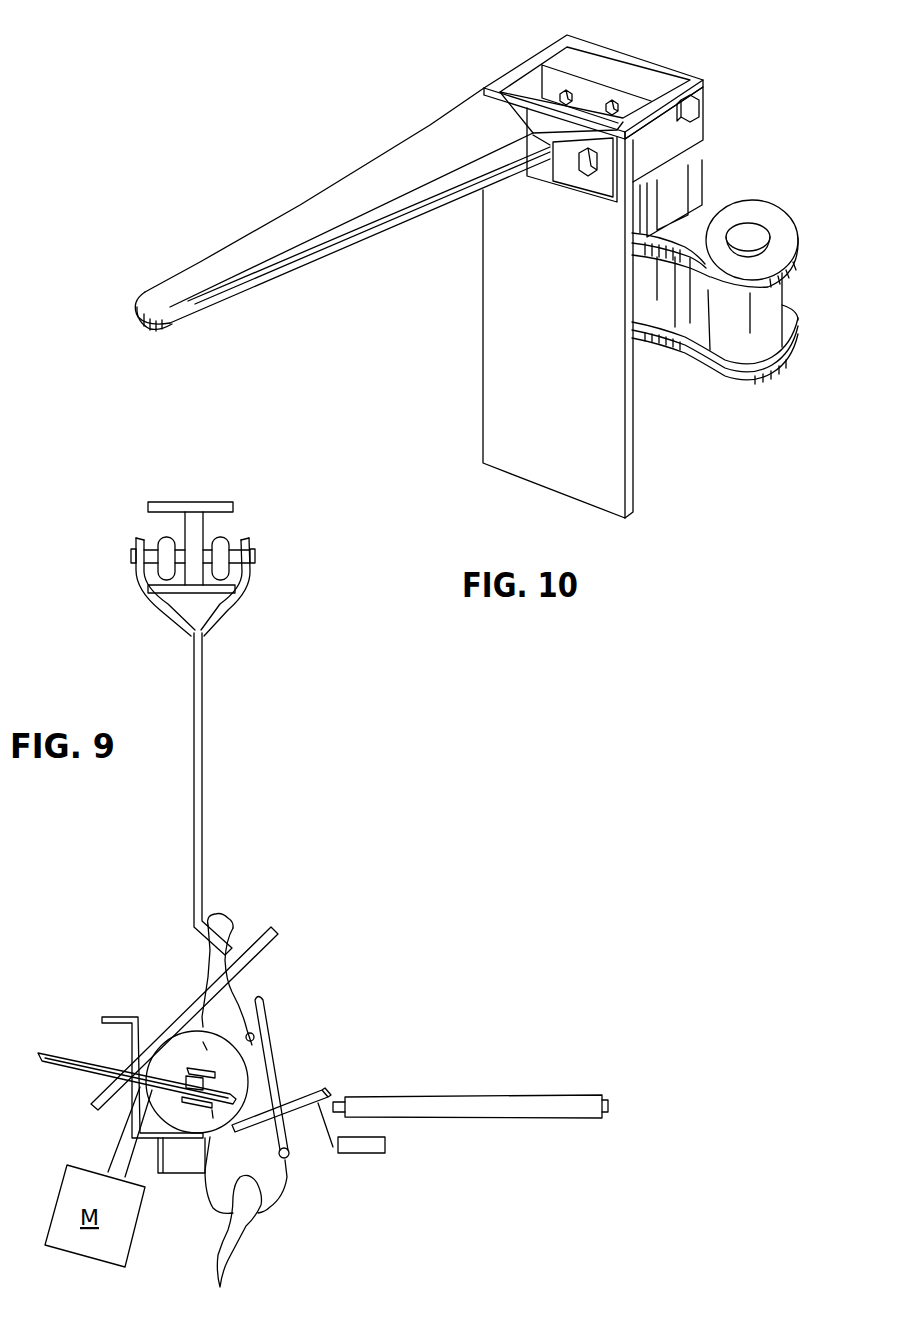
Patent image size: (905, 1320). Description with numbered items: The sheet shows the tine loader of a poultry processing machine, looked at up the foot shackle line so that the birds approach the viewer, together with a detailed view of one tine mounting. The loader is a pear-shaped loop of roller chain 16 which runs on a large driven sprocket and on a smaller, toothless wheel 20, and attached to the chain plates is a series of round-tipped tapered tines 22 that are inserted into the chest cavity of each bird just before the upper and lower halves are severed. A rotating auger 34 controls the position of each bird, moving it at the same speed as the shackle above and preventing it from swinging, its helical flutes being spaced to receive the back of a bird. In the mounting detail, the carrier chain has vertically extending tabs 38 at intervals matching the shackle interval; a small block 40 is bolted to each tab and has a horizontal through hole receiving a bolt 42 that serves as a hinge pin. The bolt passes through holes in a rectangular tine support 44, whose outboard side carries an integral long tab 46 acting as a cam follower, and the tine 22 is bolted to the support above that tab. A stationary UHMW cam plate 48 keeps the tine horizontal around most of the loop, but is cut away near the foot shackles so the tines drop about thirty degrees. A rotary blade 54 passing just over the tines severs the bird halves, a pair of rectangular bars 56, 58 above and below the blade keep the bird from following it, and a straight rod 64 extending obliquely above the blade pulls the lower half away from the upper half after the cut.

In FIG. 10, the roller chain 16 is at (690, 350).
In FIG. 9, the toothless wheel 20 is at (452, 1097).
In FIG. 10, the tine 22 is at (298, 217).
In FIG. 9, the tine 22 is at (302, 1085).
In FIG. 9, the rotating auger 34 is at (168, 1053).
In FIG. 10, the tab 38 is at (548, 82).
In FIG. 10, the block 40 is at (602, 67).
In FIG. 10, the bolt 42 is at (707, 110).
In FIG. 10, the tine support 44 is at (697, 72).
In FIG. 10, the long tab 46 is at (503, 418).
In FIG. 9, the cam plate 48 is at (372, 1155).
In FIG. 9, the rotary blade 54 is at (45, 1048).
In FIG. 9, the rectangular bar 56 is at (237, 1073).
In FIG. 9, the rectangular bar 58 is at (183, 1110).
In FIG. 9, the straight rod 64 is at (263, 933).